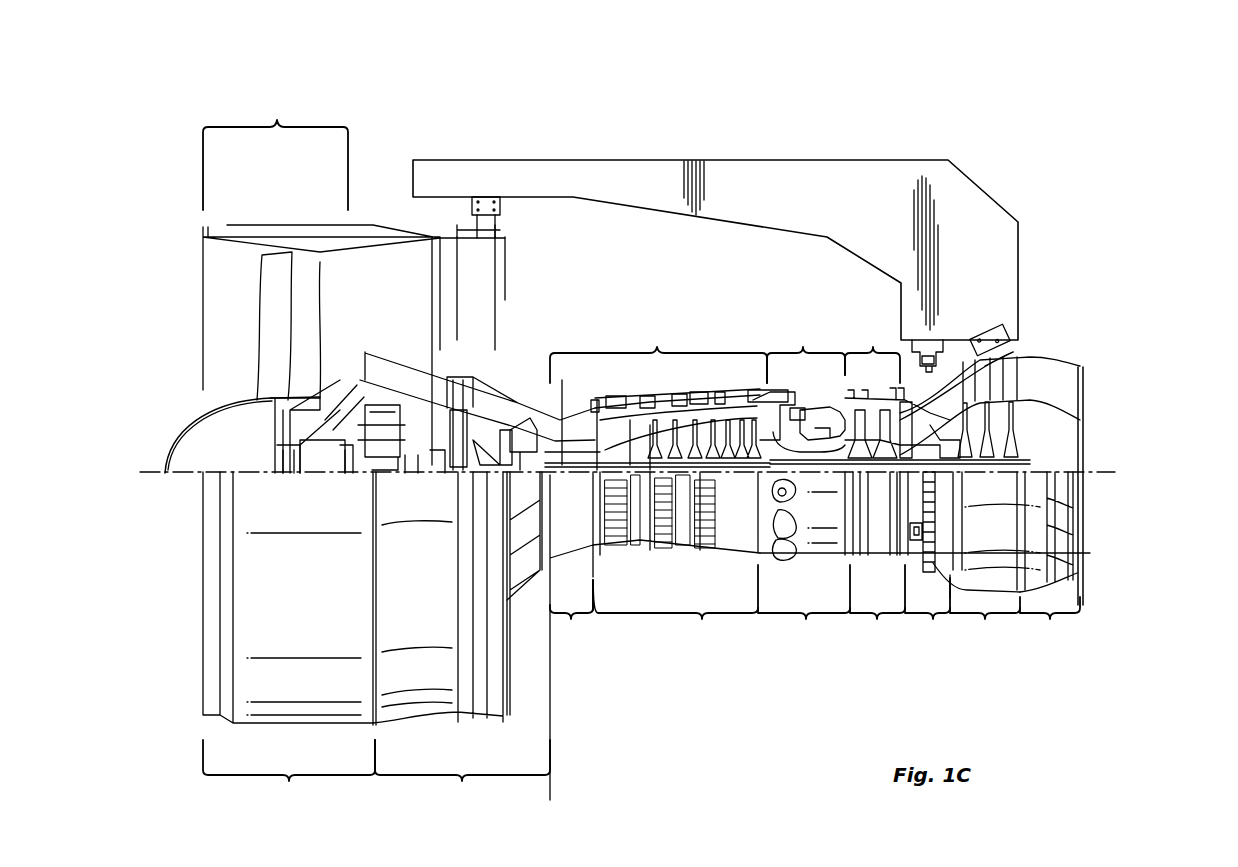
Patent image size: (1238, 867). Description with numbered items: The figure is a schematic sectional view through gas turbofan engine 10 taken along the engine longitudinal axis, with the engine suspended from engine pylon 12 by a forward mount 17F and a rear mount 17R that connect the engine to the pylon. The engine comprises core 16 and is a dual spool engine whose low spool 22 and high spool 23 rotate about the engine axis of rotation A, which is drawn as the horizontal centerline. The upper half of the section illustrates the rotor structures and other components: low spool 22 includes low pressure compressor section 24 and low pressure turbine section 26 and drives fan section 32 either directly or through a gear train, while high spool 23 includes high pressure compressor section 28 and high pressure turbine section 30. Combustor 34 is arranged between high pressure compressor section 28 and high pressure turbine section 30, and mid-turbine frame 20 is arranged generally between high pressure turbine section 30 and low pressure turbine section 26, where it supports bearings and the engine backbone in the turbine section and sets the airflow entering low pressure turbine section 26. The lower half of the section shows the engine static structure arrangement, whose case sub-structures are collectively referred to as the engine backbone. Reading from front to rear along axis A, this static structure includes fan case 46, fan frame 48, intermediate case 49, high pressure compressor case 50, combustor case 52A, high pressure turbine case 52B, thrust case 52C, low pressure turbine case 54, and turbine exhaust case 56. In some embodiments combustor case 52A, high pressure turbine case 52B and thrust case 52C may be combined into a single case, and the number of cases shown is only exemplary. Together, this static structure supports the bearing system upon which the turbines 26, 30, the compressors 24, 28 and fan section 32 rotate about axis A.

The gas turbofan engine 10 is at (152, 108).
The engine pylon 12 is at (911, 132).
The core 16 is at (1126, 540).
The forward mount 17F is at (516, 207).
The rear mount 17R is at (1046, 333).
The mid-turbine frame 20 is at (920, 400).
The low spool 22 is at (552, 468).
The high spool 23 is at (806, 468).
The low pressure compressor section 24 is at (452, 364).
The low pressure turbine section 26 is at (1040, 393).
The high pressure compressor section 28 is at (658, 352).
The high pressure turbine section 30 is at (872, 352).
The fan section 32 is at (354, 279).
The combustor 34 is at (268, 337).
The fan case 46 is at (289, 639).
The fan frame 48 is at (461, 639).
The intermediate case 49 is at (575, 636).
The high pressure compressor case 50 is at (676, 558).
The combustor case 52A is at (924, 562).
The high pressure turbine case 52B is at (875, 558).
The thrust case 52C is at (920, 558).
The low pressure turbine case 54 is at (986, 558).
The turbine exhaust case 56 is at (1050, 558).
The engine axis of rotation A is at (1097, 473).